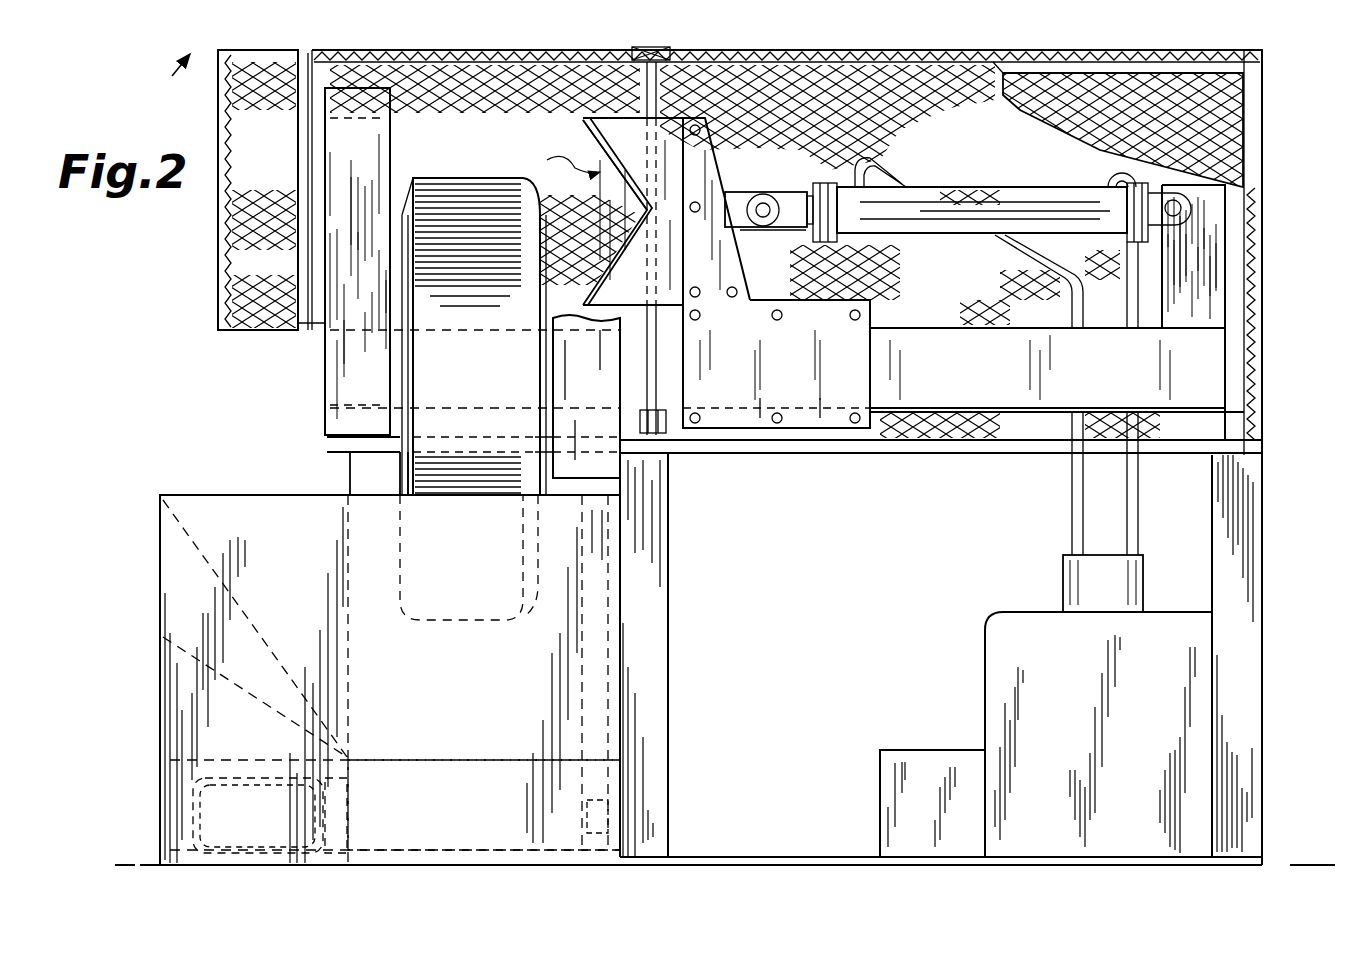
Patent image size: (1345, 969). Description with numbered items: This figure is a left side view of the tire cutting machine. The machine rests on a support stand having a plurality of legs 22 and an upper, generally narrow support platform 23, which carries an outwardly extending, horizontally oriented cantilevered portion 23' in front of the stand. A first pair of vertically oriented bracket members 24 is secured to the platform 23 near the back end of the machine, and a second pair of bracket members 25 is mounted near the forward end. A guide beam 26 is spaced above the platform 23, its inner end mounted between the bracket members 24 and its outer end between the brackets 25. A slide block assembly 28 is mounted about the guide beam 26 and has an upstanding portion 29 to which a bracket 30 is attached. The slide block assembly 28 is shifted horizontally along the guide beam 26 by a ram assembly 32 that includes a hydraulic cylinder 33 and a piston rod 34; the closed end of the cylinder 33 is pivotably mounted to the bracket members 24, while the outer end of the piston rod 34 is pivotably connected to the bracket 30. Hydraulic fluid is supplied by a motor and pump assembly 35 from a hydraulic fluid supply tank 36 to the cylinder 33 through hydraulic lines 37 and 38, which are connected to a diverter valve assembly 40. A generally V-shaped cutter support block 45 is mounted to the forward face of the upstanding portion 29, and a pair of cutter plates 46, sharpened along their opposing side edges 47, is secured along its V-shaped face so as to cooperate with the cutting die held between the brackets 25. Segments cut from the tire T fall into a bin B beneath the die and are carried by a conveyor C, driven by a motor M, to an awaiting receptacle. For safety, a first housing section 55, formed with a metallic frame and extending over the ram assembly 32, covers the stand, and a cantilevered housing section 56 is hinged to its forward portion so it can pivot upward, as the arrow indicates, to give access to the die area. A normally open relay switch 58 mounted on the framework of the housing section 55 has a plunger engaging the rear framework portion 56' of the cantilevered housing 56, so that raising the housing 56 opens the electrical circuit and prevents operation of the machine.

The legs 22 is at (653, 618).
The support platform 23 is at (941, 457).
The cantilevered portion 23' is at (436, 466).
The bracket members 24 is at (1213, 275).
The bracket members 25 is at (345, 375).
The guide beam 26 is at (1047, 368).
The slide block assembly 28 is at (793, 400).
The upstanding portion 29 is at (738, 208).
The bracket 30 is at (750, 228).
The ram assembly 32 is at (983, 178).
The hydraulic cylinder 33 is at (1060, 163).
The piston rod 34 is at (803, 193).
The motor and pump assembly 35 is at (895, 785).
The hydraulic fluid supply tank 36 is at (1000, 678).
The hydraulic line 37 is at (1137, 503).
The hydraulic line 38 is at (1072, 530).
The diverter valve assembly 40 is at (1080, 573).
The cutter support block 45 is at (612, 128).
The cutter plates 46 is at (552, 157).
The side edges 47 is at (583, 120).
The first housing section 55 is at (1240, 108).
The cantilevered housing section 56 is at (213, 190).
The rear framework portion 56' is at (590, 396).
The relay switch 58 is at (667, 423).
The bin B is at (172, 590).
The motor M is at (200, 805).
The tire T is at (455, 178).
The conveyor C is at (466, 758).